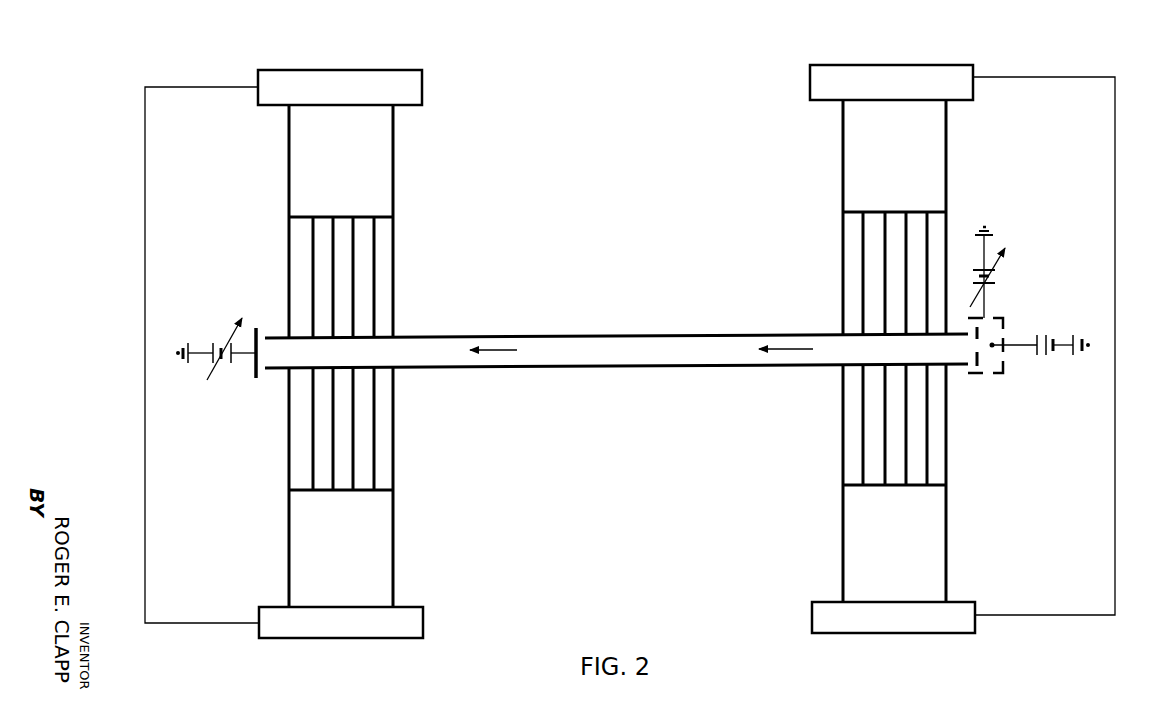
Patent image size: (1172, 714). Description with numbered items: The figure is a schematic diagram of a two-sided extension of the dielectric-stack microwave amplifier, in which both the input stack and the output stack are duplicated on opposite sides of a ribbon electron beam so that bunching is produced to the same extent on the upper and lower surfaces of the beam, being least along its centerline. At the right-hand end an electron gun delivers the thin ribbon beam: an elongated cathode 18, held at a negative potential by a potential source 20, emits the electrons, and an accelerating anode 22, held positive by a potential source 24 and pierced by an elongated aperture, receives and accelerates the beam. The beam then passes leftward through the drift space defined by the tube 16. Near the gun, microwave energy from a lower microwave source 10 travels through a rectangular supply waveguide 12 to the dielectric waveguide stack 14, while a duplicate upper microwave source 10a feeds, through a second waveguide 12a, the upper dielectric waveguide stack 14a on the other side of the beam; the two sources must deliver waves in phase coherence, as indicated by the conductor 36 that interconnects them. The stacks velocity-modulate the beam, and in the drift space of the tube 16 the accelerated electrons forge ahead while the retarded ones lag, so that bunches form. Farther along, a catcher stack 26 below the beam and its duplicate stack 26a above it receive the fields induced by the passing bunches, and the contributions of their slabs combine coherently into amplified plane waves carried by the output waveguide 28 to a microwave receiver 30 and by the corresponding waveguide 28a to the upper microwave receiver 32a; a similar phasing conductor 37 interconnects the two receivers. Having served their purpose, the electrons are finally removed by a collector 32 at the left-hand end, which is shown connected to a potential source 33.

The microwave source 10 is at (878, 634).
The upper microwave source 10a is at (860, 65).
The waveguide 12 is at (906, 558).
The waveguide section 12a is at (916, 162).
The dielectric waveguide stack 14 is at (887, 428).
The upper dielectric waveguide stack 14a is at (887, 272).
The tube 16 is at (588, 336).
The cathode 18 is at (990, 338).
The potential source 20 is at (1045, 360).
The accelerating anode 22 is at (983, 356).
The potential source 24 is at (1002, 282).
The dielectric waveguide stack 26 is at (350, 437).
The slow-wave grating structure 26a is at (352, 282).
The wave guide 28 is at (352, 566).
The waveguide section 28a is at (362, 166).
The microwave receiver 30 is at (323, 639).
The collector 32 is at (252, 371).
The microwave receiver 32a is at (305, 70).
The variable collector voltage source 33 is at (222, 337).
The conductor 36 is at (1115, 455).
The phasing conductor 37 is at (145, 262).